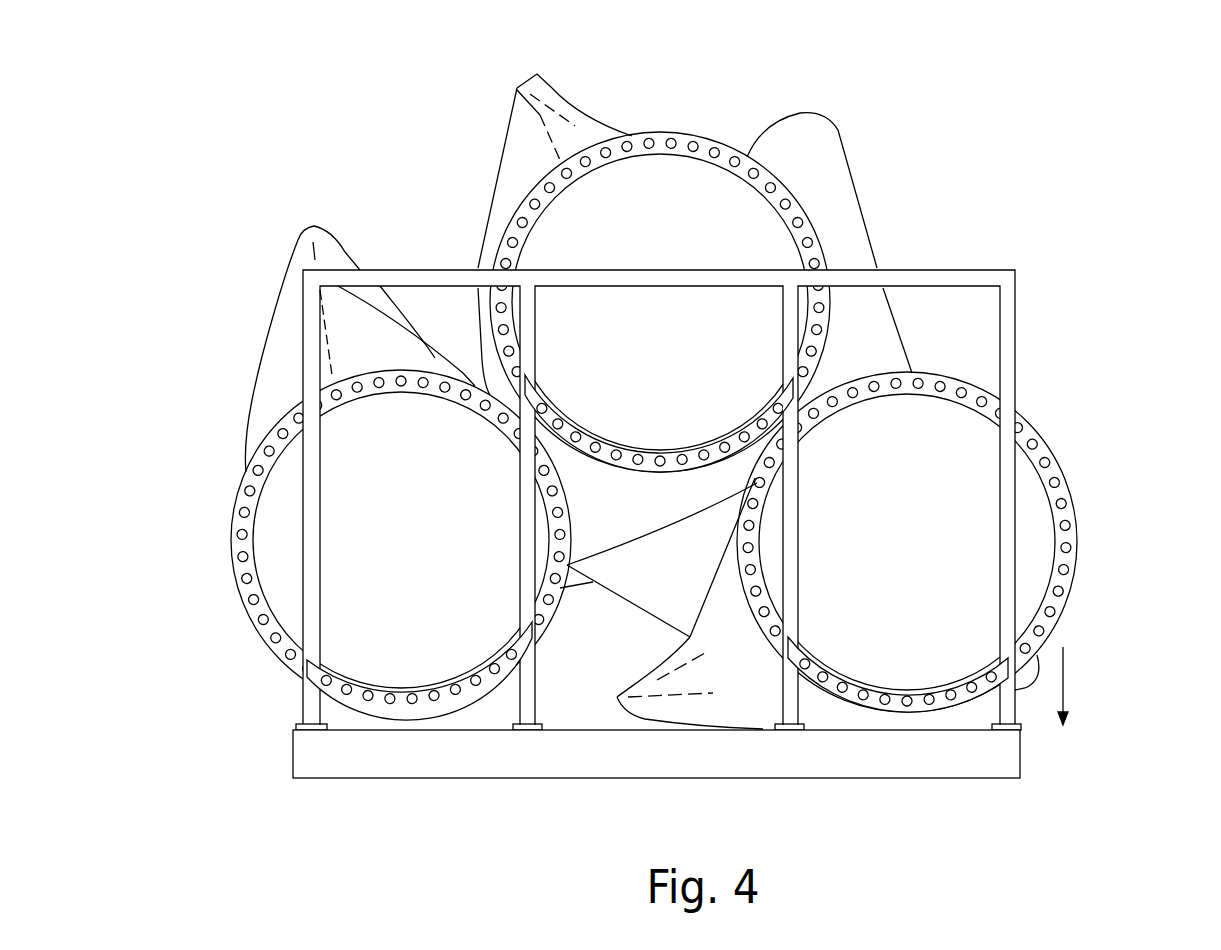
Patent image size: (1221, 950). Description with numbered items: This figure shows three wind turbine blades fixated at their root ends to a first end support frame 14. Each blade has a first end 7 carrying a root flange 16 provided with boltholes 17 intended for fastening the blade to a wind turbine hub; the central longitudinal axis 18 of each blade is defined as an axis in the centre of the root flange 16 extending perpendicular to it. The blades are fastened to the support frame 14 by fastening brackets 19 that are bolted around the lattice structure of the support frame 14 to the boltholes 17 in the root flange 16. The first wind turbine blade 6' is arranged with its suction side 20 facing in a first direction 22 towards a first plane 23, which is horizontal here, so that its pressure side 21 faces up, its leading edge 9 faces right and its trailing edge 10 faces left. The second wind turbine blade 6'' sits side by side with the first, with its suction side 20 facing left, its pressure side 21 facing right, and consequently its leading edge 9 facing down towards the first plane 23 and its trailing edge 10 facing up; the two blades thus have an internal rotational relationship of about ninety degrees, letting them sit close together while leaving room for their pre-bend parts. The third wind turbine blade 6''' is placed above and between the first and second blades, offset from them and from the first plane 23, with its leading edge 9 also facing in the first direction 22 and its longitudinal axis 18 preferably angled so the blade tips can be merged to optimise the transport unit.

The first end 7 is at (650, 452).
The root flange 16 is at (703, 140).
The leading edge 9 is at (1082, 517).
The boltholes 17 is at (1072, 567).
The first end support frame 14 is at (1017, 342).
The central longitudinal axis 18 is at (660, 297).
The fastening brackets 19 is at (567, 433).
The first plane 23 is at (933, 733).
The trailing edge 10 is at (520, 88).
The first wind turbine blade 6' is at (867, 243).
The second wind turbine blade 6'' is at (394, 277).
The third wind turbine blade 6''' is at (562, 209).
The pressure side 21 is at (860, 377).
The suction side 20 is at (248, 600).
The first direction 22 is at (1065, 682).